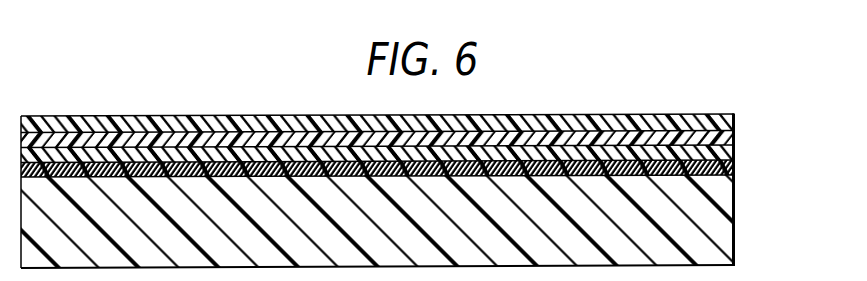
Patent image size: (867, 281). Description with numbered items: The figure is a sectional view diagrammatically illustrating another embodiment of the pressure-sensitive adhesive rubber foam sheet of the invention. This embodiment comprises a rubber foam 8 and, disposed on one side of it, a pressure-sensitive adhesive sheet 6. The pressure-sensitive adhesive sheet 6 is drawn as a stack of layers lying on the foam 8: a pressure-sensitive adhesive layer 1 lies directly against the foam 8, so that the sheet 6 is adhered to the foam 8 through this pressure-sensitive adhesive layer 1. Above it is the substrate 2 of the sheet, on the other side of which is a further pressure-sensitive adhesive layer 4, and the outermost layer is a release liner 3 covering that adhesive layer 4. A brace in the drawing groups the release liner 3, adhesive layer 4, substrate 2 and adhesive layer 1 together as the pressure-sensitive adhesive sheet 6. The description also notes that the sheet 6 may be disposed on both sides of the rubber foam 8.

The pressure-sensitive adhesive layer 1 is at (399, 174).
The substrate 2 is at (735, 146).
The release liner 3 is at (735, 115).
The pressure-sensitive adhesive layer 4 is at (735, 131).
The pressure-sensitive adhesive sheet 6 is at (419, 140).
The foam 8 is at (735, 217).